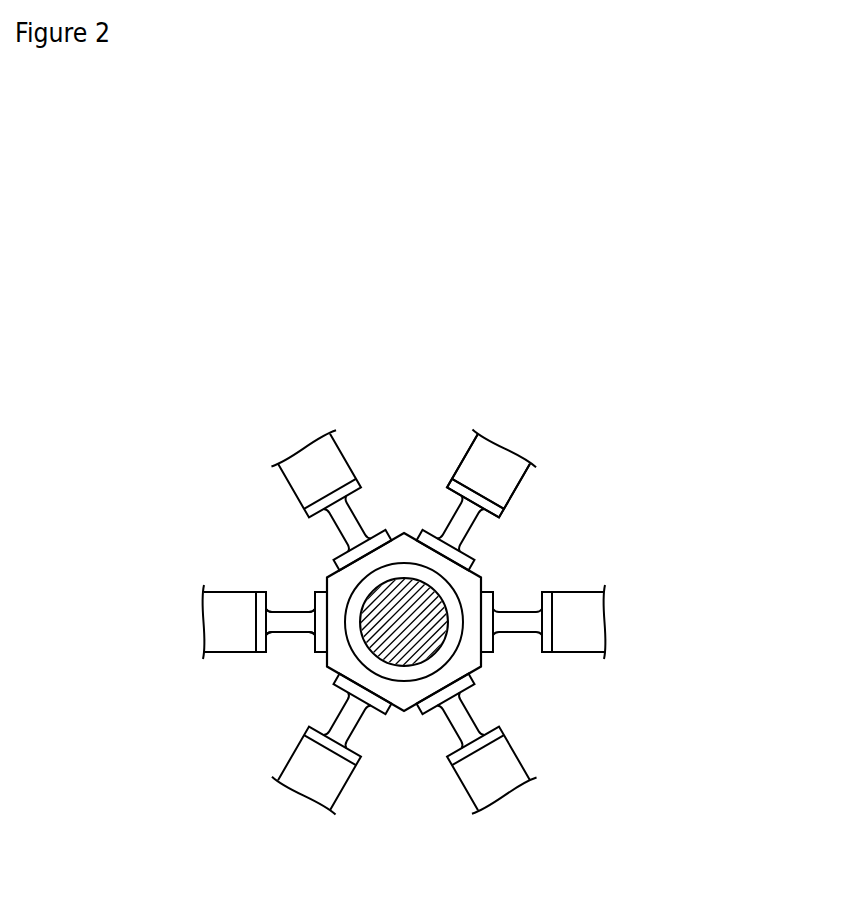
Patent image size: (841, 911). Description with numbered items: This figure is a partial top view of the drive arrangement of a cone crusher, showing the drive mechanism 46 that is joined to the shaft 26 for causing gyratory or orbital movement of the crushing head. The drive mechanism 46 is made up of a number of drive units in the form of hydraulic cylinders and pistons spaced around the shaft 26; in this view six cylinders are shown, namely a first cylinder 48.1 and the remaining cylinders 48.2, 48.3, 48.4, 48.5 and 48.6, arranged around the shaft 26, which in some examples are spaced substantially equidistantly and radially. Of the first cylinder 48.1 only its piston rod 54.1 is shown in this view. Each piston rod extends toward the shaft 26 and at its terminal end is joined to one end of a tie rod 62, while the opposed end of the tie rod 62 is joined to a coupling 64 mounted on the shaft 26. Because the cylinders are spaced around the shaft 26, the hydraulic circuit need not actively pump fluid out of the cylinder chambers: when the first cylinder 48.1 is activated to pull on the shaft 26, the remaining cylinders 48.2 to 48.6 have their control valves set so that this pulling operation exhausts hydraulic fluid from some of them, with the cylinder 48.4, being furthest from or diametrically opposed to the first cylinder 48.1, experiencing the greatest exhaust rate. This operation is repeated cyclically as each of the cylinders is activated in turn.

The drive mechanism 46 is at (95, 452).
The shaft 26 is at (430, 632).
The coupling 64 is at (403, 693).
The tie rod 62 is at (288, 628).
The piston rod 54.1 is at (513, 476).
The first cylinder 48.1 is at (498, 462).
The cylinder 48.2 is at (575, 619).
The cylinder 48.3 is at (483, 768).
The cylinder 48.4 is at (312, 765).
The cylinder 48.5 is at (235, 618).
The cylinder 48.6 is at (300, 450).